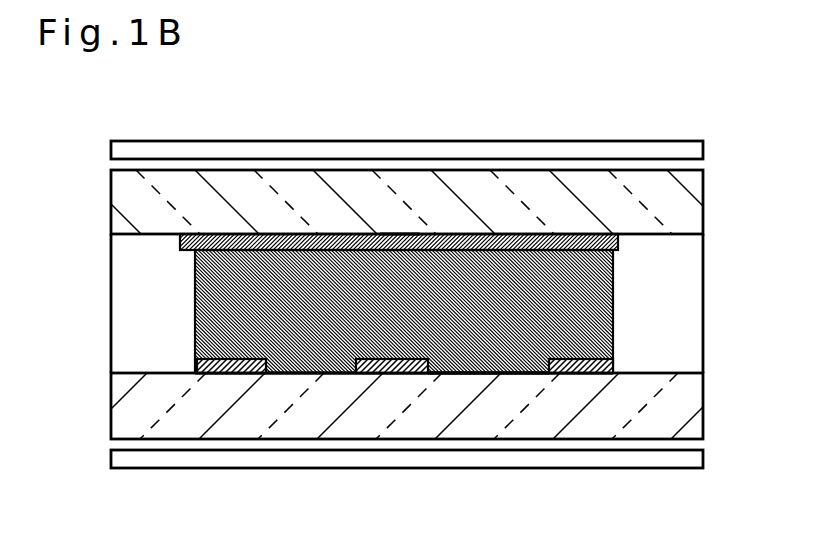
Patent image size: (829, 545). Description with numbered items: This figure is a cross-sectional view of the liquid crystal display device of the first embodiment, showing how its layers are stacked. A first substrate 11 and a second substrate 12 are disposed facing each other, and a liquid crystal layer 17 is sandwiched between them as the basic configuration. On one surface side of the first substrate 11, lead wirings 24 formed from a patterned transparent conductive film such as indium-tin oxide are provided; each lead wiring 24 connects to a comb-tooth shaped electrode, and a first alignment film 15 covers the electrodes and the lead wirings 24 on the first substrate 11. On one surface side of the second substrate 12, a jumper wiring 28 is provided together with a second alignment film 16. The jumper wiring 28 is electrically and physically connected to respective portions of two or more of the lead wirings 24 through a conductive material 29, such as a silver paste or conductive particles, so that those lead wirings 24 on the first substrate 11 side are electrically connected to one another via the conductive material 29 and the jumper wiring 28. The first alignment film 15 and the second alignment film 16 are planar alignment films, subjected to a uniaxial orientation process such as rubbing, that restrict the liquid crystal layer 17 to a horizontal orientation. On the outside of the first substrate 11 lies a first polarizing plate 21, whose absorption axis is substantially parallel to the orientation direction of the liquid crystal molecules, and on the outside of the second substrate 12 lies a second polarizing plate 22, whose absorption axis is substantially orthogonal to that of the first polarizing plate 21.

The second polarizing plate 22 is at (703, 150).
The second substrate 12 is at (703, 210).
The second alignment film 16 is at (703, 248).
The liquid crystal layer 17 is at (703, 303).
The first alignment film 15 is at (703, 362).
The lead wiring 24 is at (240, 373).
The conductive material 29 is at (490, 360).
The first substrate 11 is at (703, 409).
The first polarizing plate 21 is at (703, 462).
The jumper wiring 28 is at (400, 234).